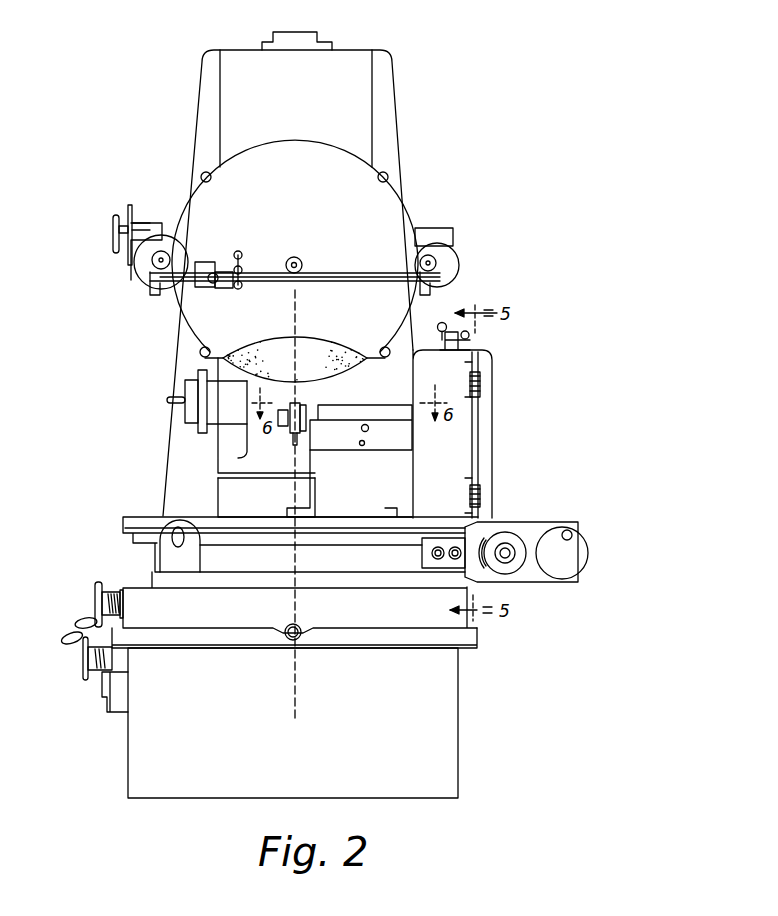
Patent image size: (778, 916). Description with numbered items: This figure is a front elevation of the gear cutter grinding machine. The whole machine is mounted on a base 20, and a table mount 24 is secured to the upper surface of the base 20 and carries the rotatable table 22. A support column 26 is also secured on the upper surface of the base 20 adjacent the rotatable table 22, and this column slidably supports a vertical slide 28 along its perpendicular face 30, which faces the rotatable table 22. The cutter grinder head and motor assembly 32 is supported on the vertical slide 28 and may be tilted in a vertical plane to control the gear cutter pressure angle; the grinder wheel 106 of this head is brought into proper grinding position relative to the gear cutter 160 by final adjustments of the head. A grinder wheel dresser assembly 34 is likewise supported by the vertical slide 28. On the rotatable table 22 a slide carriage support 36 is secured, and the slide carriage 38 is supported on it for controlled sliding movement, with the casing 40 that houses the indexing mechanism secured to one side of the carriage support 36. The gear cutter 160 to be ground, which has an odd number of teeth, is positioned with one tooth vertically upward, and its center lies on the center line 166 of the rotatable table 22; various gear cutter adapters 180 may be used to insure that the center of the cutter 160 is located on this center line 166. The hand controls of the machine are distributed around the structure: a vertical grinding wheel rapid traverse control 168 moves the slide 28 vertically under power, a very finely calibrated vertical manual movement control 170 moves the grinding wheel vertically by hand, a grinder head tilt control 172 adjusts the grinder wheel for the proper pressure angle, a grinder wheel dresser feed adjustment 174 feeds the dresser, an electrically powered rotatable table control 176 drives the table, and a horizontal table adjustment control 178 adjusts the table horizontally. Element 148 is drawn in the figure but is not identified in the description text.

The base 20 is at (458, 690).
The rotatable table 22 is at (128, 518).
The table mount 24 is at (131, 590).
The support column 26 is at (201, 148).
The vertical slide 28 is at (227, 441).
The perpendicular face 30 is at (392, 92).
The cutter grinder head and motor assembly 32 is at (404, 206).
The grinder wheel dresser assembly 34 is at (210, 250).
The slide carriage support 36 is at (404, 482).
The slide carriage 38 is at (404, 444).
The casing 40 is at (458, 453).
The grinder wheel 106 is at (277, 346).
The control valve 148 is at (470, 343).
The gear cutter 160 is at (301, 440).
The center line 166 is at (285, 492).
The vertical grinding wheel rapid traverse control 168 is at (98, 688).
The vertical manual movement control 170 is at (82, 668).
The grinder head tilt control 172 is at (185, 413).
The grinder wheel dresser feed adjustment 174 is at (112, 228).
The electrically powered rotatable table control 176 is at (530, 578).
The horizontal table adjustment control 178 is at (94, 597).
The gear cutter adapter 180 is at (305, 407).